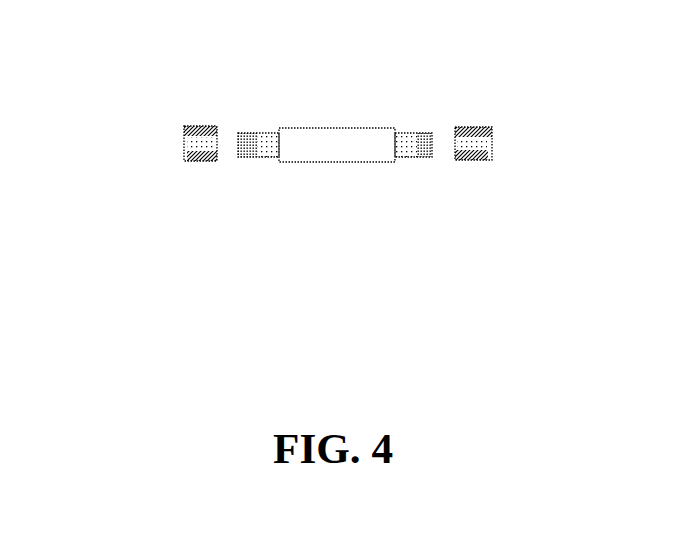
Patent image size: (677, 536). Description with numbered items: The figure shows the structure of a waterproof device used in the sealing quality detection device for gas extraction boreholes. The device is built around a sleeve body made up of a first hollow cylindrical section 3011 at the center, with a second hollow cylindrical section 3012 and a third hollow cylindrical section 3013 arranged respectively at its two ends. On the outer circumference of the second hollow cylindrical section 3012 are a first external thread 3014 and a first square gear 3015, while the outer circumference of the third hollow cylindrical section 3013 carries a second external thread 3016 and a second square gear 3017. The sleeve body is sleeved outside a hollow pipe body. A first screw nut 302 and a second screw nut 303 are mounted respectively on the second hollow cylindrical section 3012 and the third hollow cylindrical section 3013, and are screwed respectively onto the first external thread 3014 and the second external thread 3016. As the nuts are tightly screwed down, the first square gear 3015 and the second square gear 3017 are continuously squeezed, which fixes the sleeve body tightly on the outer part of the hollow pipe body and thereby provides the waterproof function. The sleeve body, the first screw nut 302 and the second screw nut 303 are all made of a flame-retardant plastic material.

The first screw nut 302 is at (178, 130).
The second screw nut 303 is at (508, 156).
The first hollow cylindrical section 3011 is at (352, 178).
The second hollow cylindrical section 3012 is at (258, 182).
The third hollow cylindrical section 3013 is at (437, 180).
The first external thread 3014 is at (272, 120).
The first square gear 3015 is at (246, 120).
The second external thread 3016 is at (412, 120).
The second square gear 3017 is at (437, 122).